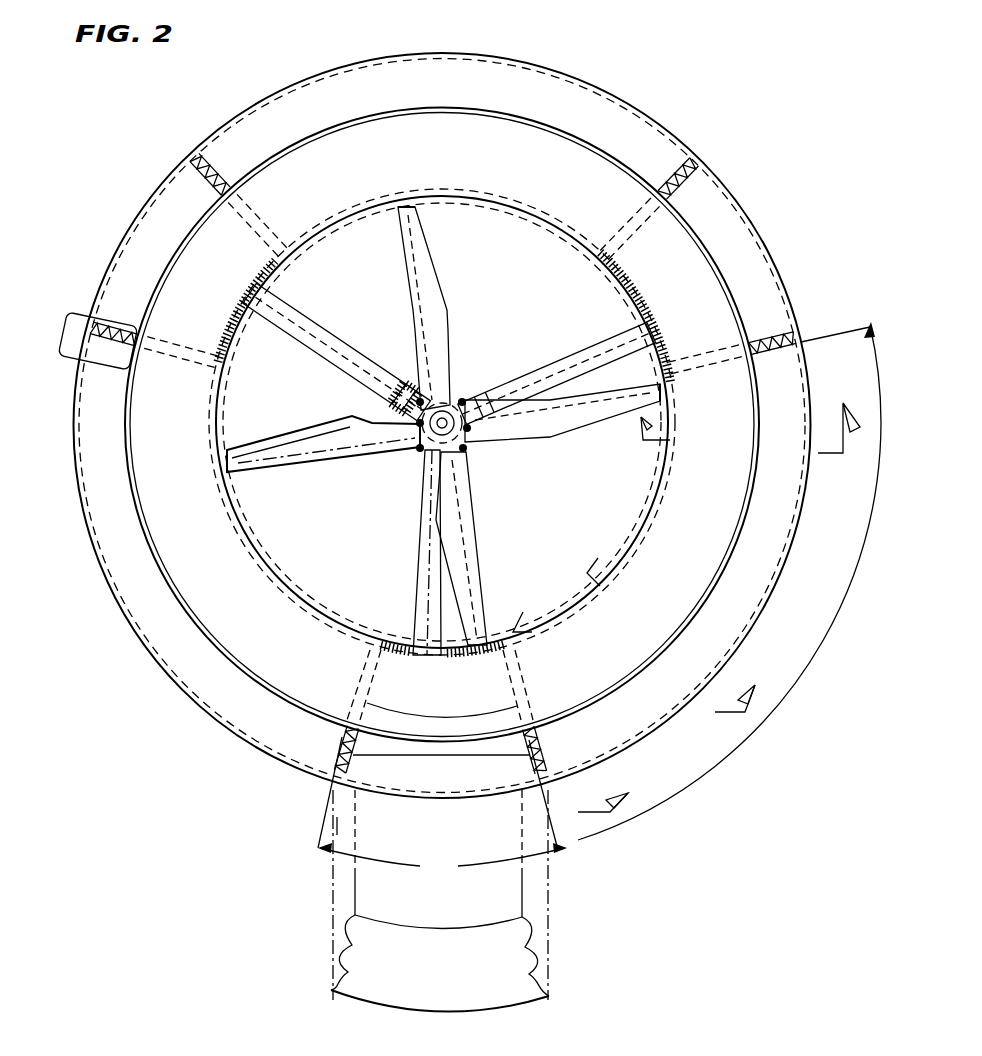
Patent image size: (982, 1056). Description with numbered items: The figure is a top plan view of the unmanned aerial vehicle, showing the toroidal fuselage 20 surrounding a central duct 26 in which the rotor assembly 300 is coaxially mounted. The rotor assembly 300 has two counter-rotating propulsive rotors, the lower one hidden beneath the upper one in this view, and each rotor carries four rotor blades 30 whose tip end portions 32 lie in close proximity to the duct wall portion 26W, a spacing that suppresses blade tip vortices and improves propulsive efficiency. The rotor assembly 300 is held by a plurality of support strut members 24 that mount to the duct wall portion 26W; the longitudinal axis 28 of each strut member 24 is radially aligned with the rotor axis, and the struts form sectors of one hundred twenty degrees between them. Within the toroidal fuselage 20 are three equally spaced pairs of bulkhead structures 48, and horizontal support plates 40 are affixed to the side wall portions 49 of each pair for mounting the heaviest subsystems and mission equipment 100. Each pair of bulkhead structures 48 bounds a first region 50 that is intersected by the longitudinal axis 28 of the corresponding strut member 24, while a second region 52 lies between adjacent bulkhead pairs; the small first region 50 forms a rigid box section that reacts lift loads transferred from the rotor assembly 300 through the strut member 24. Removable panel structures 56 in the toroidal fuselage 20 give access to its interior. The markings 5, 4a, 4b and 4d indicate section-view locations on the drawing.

The toroidal fuselage 20 is at (604, 54).
The support strut member 24 is at (325, 338).
The duct 26 is at (328, 242).
The duct wall portion 26W is at (232, 503).
The longitudinal axis 28 is at (300, 303).
The rotor blade 30 is at (440, 310).
The tip end portion 32 is at (419, 207).
The horizontal support plate 40 is at (492, 752).
The bulkhead structure 48 is at (198, 150).
The side wall portion 49 is at (350, 753).
The first region 50 is at (442, 860).
The second region 52 is at (752, 697).
The removable panel structure 56 is at (388, 86).
The mission equipment 100 is at (418, 458).
The rotor assembly 300 is at (460, 396).
The section line 5 is at (74, 314).
The section line 4a is at (727, 418).
The section line 4b is at (679, 616).
The section line 4d is at (589, 693).